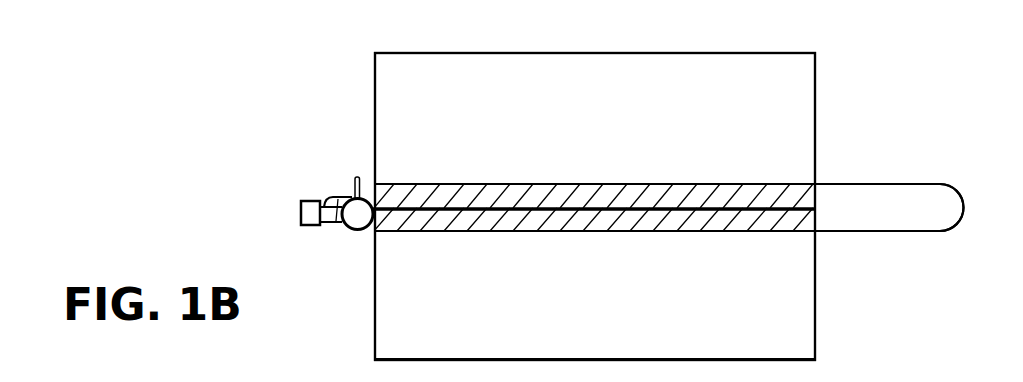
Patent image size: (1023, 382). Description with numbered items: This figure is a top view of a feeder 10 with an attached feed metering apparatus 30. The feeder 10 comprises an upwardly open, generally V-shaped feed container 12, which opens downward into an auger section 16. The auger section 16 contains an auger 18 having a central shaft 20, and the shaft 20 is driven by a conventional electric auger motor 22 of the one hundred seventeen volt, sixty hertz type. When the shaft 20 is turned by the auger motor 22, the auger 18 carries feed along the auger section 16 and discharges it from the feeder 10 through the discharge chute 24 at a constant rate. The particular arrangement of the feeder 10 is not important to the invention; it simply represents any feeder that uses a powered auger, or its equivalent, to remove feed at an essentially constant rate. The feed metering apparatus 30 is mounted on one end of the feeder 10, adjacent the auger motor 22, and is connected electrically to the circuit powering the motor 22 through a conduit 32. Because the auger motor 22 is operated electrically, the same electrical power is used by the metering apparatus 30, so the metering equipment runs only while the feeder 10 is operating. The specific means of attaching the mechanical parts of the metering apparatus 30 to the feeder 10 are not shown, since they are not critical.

The feeder 10 is at (830, 118).
The feed container 12 is at (782, 298).
The auger section 16 is at (580, 176).
The auger 18 is at (494, 194).
The central shaft 20 is at (540, 212).
The auger motor 22 is at (322, 188).
The discharge chute 24 is at (910, 170).
The feed metering apparatus 30 is at (340, 243).
The conduit 32 is at (345, 171).